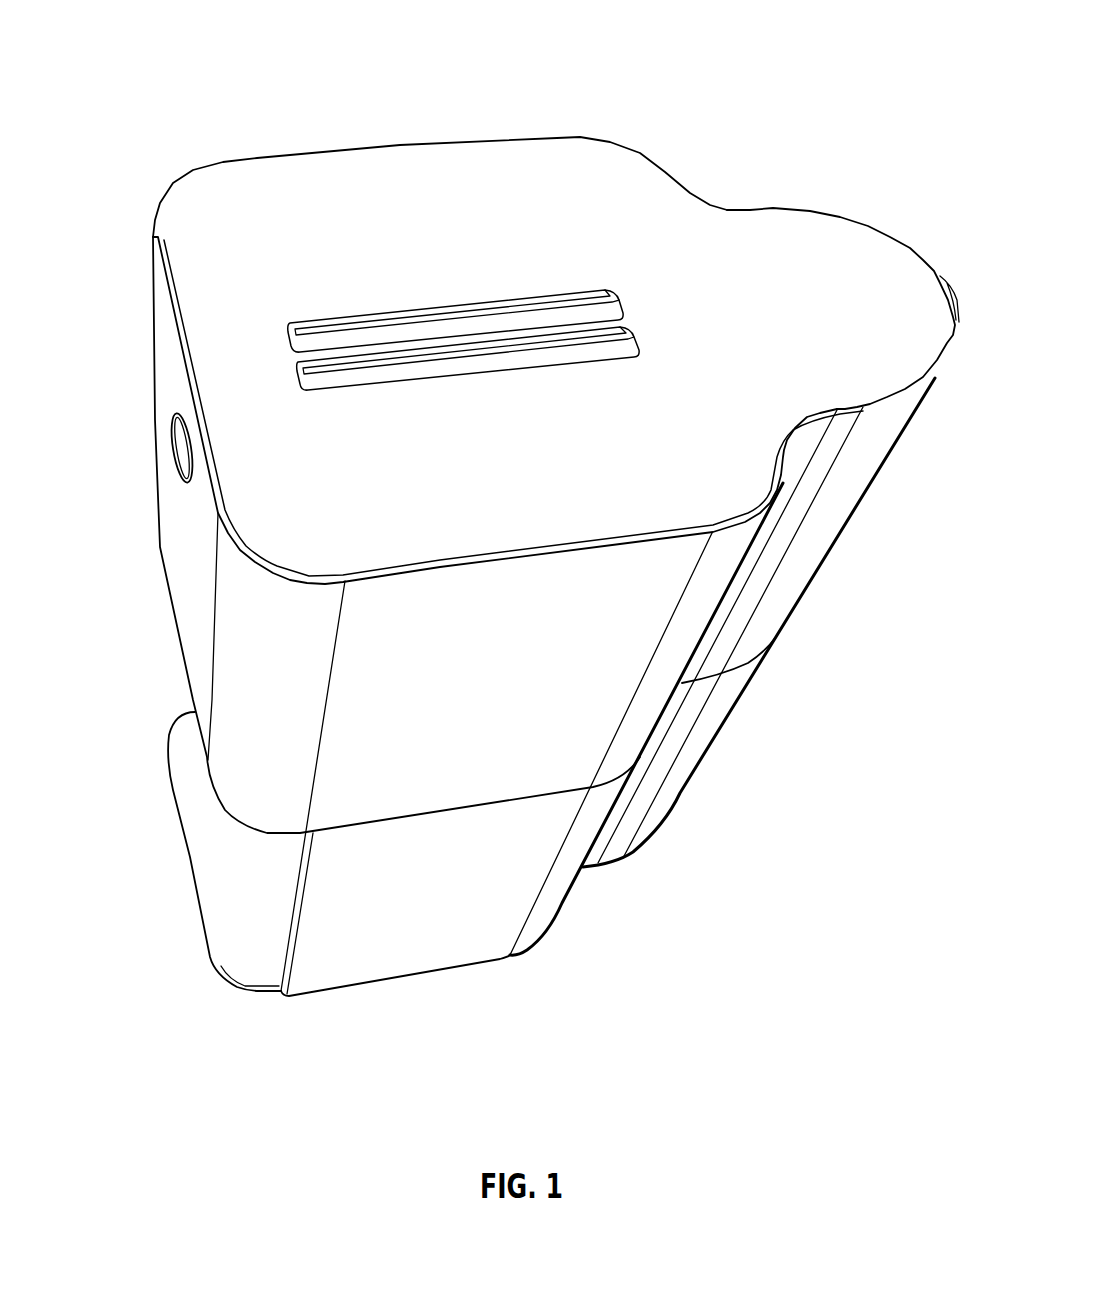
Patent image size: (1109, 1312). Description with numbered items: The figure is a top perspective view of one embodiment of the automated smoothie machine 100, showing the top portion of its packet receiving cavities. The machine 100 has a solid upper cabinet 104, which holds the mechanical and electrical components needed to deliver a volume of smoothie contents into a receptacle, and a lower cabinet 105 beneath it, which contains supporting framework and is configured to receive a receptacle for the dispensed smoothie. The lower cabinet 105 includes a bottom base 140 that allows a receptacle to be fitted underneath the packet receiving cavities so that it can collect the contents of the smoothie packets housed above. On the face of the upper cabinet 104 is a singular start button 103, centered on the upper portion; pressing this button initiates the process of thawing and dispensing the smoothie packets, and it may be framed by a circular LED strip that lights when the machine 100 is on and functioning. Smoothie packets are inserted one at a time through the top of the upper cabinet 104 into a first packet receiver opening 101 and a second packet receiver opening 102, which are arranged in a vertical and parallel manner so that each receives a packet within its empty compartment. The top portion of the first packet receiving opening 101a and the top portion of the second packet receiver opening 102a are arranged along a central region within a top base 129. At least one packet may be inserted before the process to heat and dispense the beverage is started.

The automated smoothie machine 100 is at (744, 53).
The first packet receiver opening 101 is at (455, 219).
The top portion of the first packet receiving opening 101a is at (433, 213).
The second packet receiver opening 102 is at (628, 434).
The top portion of the packet receiver opening 102a is at (337, 513).
The start button 103 is at (138, 446).
The upper cabinet 104 is at (544, 614).
The lower cabinet 105 is at (515, 921).
The top base 129 is at (843, 259).
The bottom base 140 is at (174, 851).